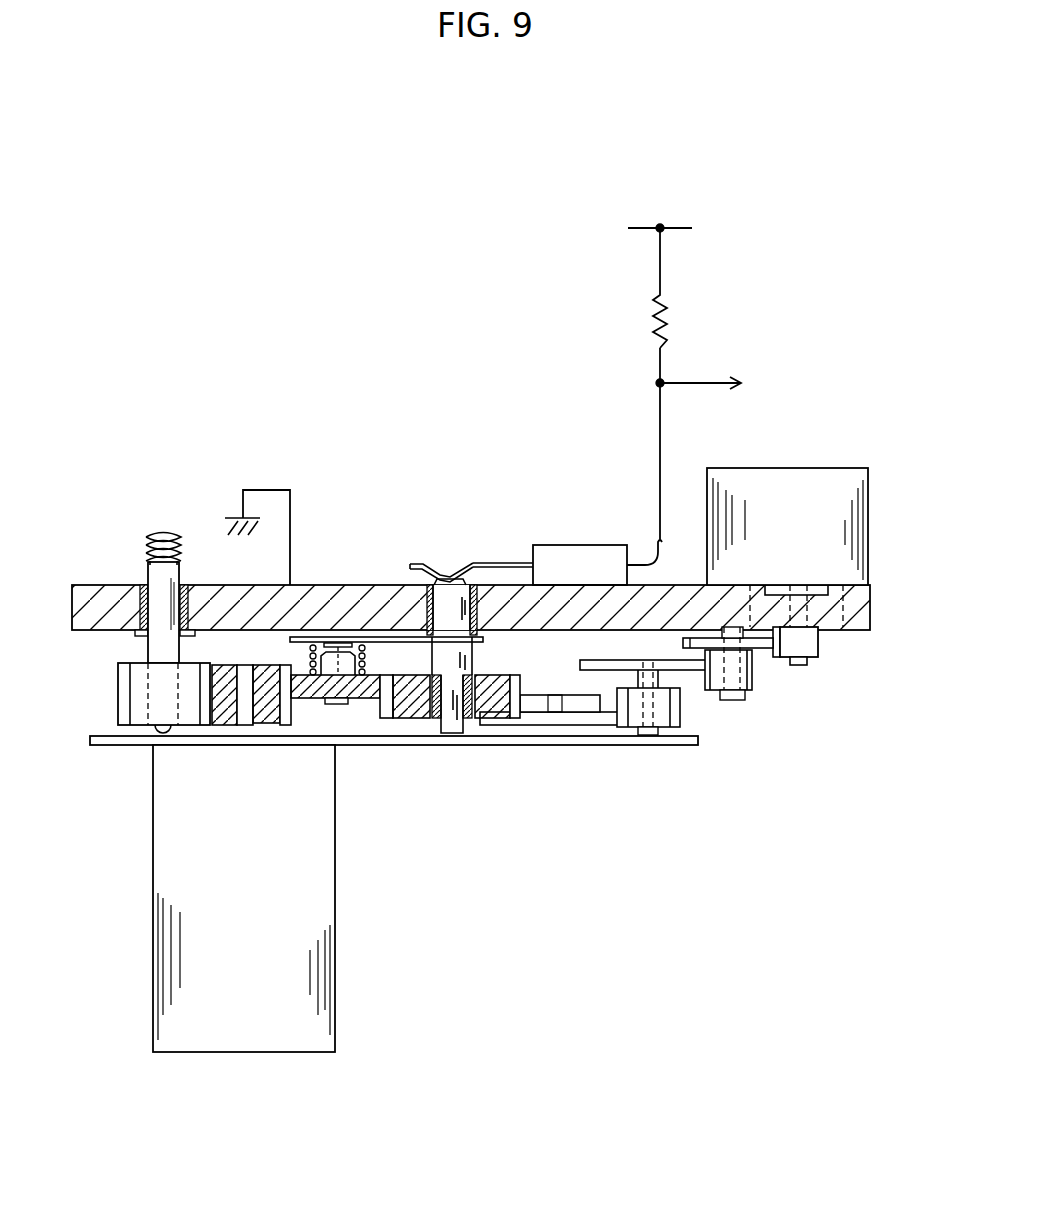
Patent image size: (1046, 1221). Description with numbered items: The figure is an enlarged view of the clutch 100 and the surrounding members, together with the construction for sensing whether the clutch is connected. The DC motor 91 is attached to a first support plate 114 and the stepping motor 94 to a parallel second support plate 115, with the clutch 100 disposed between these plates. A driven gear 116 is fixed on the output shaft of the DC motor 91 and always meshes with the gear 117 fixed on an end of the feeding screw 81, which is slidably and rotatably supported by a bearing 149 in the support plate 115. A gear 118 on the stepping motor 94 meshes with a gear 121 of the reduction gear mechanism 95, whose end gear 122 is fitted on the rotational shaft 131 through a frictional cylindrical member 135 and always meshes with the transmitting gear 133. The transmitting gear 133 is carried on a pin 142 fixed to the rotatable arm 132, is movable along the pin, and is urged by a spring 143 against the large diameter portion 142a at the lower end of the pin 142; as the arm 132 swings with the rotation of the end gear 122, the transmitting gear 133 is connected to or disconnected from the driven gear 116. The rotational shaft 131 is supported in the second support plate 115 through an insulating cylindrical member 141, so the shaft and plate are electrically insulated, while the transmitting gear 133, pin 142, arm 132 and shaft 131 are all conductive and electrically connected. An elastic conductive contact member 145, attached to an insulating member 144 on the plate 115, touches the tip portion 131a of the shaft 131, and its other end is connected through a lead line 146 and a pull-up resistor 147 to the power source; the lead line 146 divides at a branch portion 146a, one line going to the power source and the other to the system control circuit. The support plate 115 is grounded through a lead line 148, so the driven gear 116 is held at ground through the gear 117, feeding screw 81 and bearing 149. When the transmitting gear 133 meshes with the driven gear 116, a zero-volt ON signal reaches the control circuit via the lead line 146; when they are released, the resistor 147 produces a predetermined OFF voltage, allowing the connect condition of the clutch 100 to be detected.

The feeding screw 81 is at (160, 577).
The DC motor 91 is at (335, 857).
The stepping motor 94 is at (870, 522).
The reduction gear mechanism 95 is at (802, 757).
The clutch 100 is at (477, 578).
The first support plate 114 is at (115, 746).
The second support plate 115 is at (853, 628).
The driven gear 116 is at (272, 719).
The gear 117 is at (130, 690).
The gear 118 is at (813, 660).
The gear 121 is at (758, 650).
The end gear 122 is at (413, 700).
The rotational shaft 131 is at (478, 625).
The tip portion 131a is at (450, 575).
The rotatable arm 132 is at (395, 634).
The transmitting gear 133 is at (384, 699).
The frictional cylindrical member 135 is at (478, 718).
The cylindrical member 141 is at (482, 580).
The pin 142 is at (300, 700).
The large diameter portion 142a is at (322, 705).
The spring 143 is at (310, 652).
The insulating member 144 is at (583, 557).
The contact member 145 is at (517, 562).
The lead line 146 is at (660, 449).
The branch portion 146a is at (654, 383).
The pull-up resistor 147 is at (668, 300).
The lead line 148 is at (267, 490).
The bearing 149 is at (200, 585).